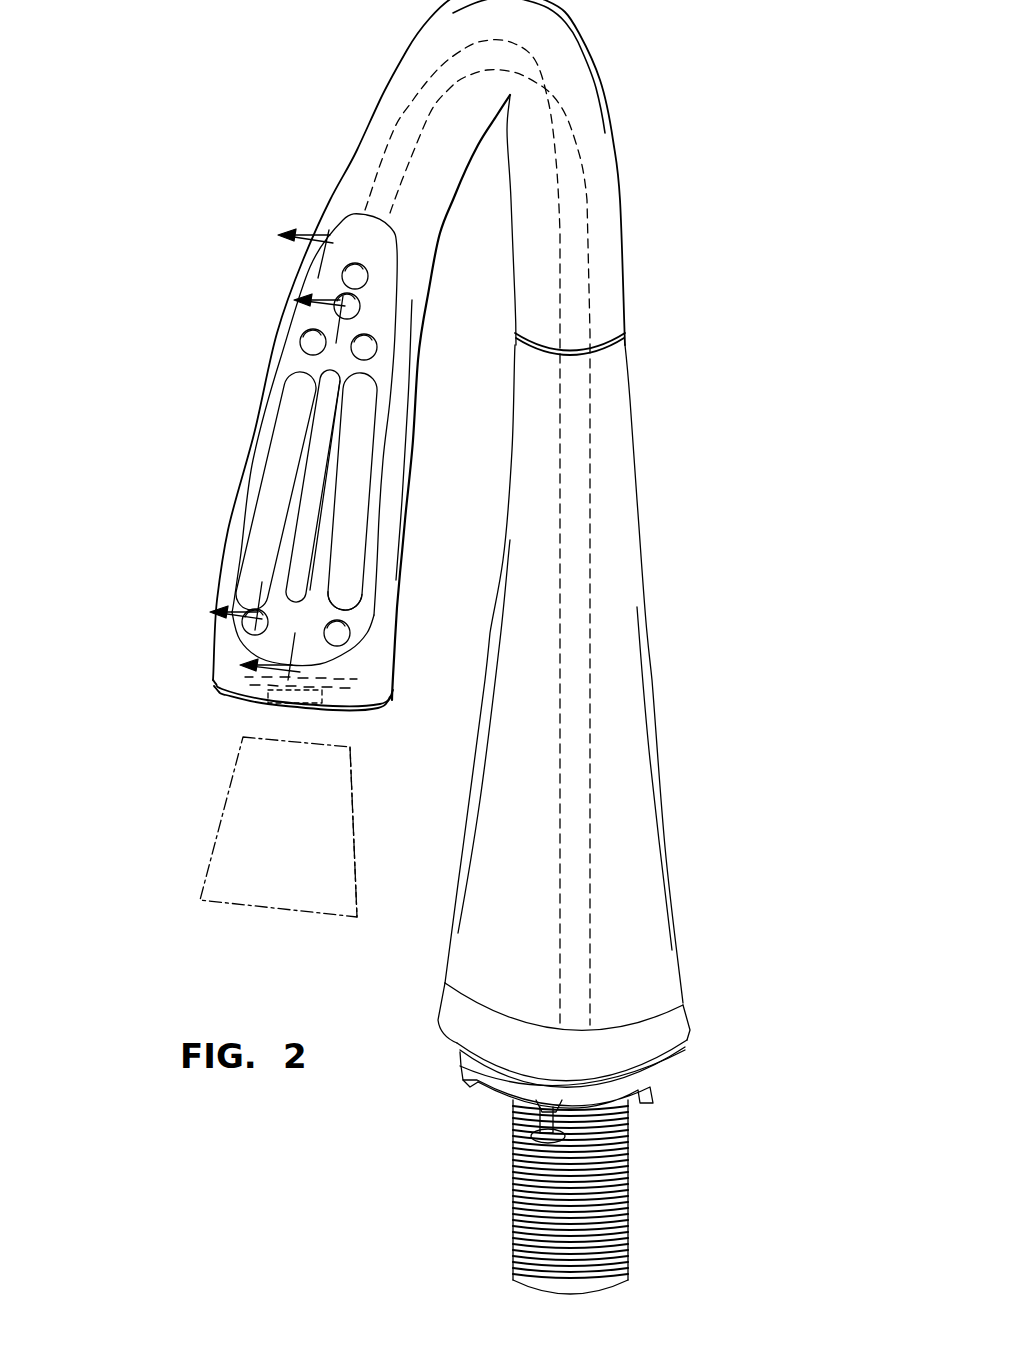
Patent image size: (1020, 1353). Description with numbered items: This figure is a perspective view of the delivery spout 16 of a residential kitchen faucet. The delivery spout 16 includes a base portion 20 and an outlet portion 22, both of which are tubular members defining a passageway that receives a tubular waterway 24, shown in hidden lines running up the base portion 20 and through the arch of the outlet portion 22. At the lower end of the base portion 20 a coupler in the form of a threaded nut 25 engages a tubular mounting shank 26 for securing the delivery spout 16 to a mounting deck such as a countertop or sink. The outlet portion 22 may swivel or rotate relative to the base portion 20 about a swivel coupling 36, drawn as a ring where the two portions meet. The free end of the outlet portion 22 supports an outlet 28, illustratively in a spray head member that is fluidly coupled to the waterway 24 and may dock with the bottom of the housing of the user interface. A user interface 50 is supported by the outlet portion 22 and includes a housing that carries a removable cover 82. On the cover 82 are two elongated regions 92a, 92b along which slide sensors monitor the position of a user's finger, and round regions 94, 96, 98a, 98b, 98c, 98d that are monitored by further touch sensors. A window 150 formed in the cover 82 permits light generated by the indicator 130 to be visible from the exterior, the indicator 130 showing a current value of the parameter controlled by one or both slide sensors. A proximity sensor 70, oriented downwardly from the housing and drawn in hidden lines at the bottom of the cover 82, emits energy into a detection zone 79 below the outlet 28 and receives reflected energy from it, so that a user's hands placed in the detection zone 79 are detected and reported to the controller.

The delivery spout 16 is at (292, 101).
The outlet portion 22 is at (622, 203).
The swivel coupling 36 is at (625, 333).
The tubular waterway 24 is at (558, 558).
The base portion 20 is at (665, 792).
The threaded nut 25 is at (690, 1062).
The tubular mounting shank 26 is at (628, 1215).
The user interface 50 is at (244, 392).
The region 94 is at (368, 277).
The region 96 is at (360, 305).
The region 98a is at (300, 342).
The region 98b is at (377, 347).
The region 98c is at (243, 630).
The region 98d is at (350, 634).
The window 150 is at (308, 483).
The indicator 130 is at (340, 375).
The region 92a is at (240, 547).
The region 92b is at (368, 523).
The removable cover 82 is at (360, 615).
The proximity sensor 70 is at (292, 712).
The detection zone 79 is at (223, 812).
The outlet 28 is at (356, 732).